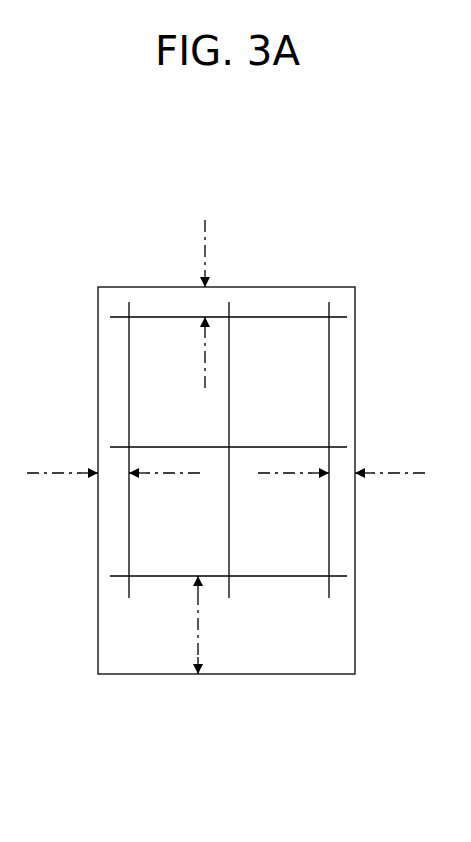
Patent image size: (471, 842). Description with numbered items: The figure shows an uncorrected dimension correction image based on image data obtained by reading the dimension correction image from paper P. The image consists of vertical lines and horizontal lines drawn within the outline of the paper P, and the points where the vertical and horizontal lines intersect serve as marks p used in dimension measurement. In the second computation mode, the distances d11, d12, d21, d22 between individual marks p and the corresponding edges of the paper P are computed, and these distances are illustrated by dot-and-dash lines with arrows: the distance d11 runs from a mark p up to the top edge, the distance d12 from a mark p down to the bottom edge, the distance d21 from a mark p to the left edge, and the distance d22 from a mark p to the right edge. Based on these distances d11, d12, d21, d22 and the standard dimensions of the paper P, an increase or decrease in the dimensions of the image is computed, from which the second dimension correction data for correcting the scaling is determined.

The paper P is at (355, 287).
The mark p is at (230, 317).
The distance d11 is at (202, 304).
The distance d12 is at (179, 625).
The distance d21 is at (113, 457).
The distance d22 is at (341, 458).